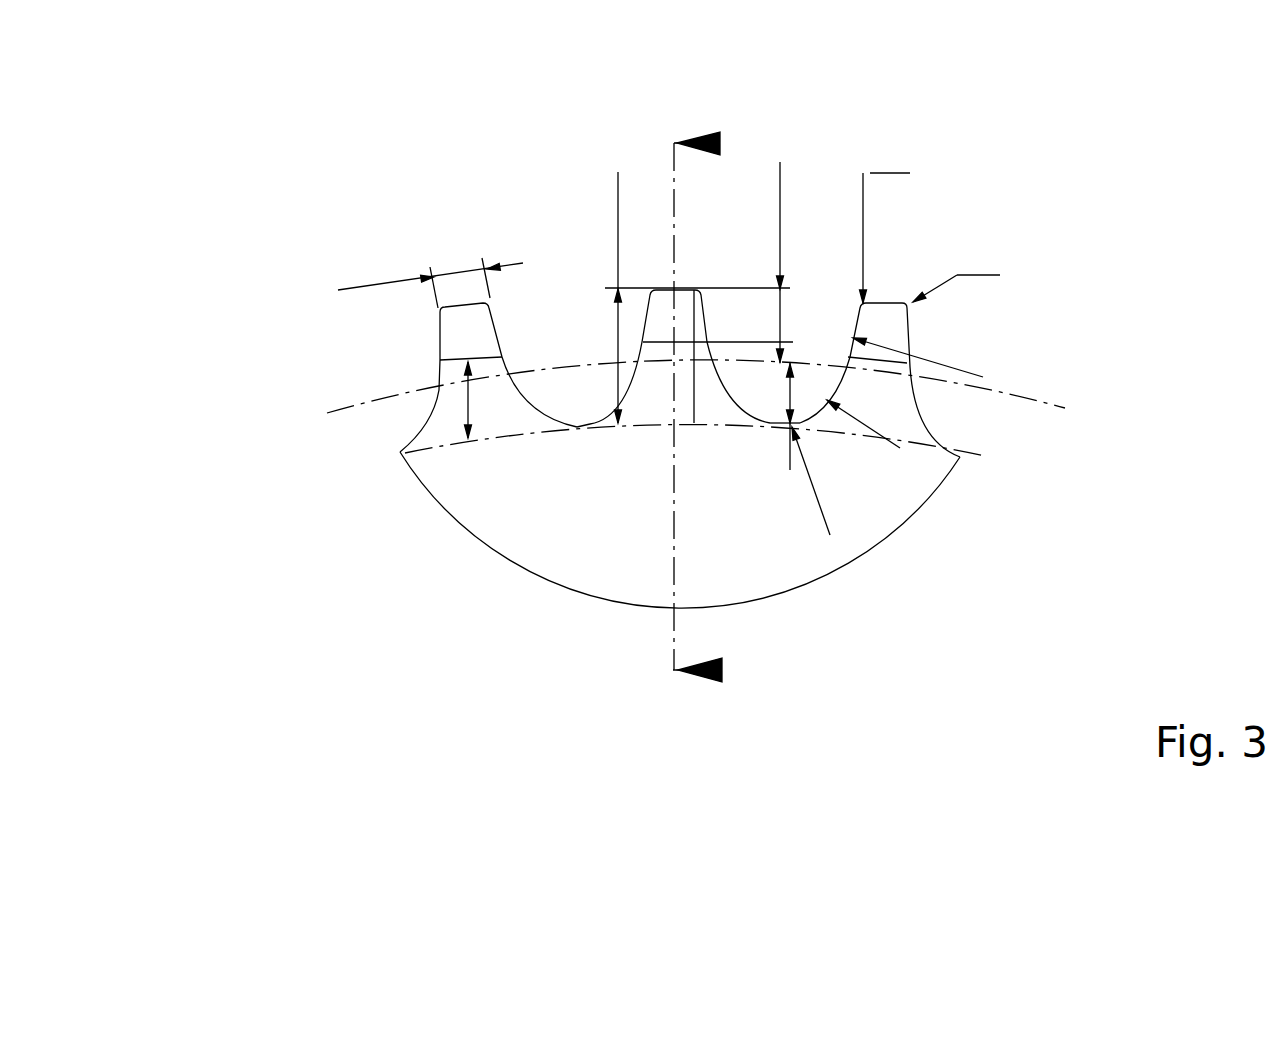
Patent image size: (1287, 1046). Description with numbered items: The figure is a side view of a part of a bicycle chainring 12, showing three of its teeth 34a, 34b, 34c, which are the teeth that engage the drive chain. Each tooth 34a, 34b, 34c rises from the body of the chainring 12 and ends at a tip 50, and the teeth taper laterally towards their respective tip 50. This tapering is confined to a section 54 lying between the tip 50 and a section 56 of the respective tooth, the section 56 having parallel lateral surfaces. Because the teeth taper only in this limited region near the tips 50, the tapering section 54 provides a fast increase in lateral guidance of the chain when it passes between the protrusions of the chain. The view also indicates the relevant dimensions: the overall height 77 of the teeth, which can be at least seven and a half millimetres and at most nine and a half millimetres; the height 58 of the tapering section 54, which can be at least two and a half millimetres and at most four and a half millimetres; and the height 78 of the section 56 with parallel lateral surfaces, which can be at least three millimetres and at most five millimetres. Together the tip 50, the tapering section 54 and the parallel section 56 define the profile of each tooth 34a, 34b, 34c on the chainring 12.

The chainring 12 is at (755, 583).
The tooth 34a is at (440, 347).
The tooth 34b is at (702, 330).
The tooth 34c is at (910, 342).
The tip 50 is at (463, 300).
The tapering section 54 is at (488, 335).
The section with parallel lateral surfaces 56 is at (443, 420).
The height of the tapering section 58 is at (782, 238).
The height of the teeth 77 is at (617, 202).
The height of the section with parallel lateral surfaces 78 is at (463, 410).